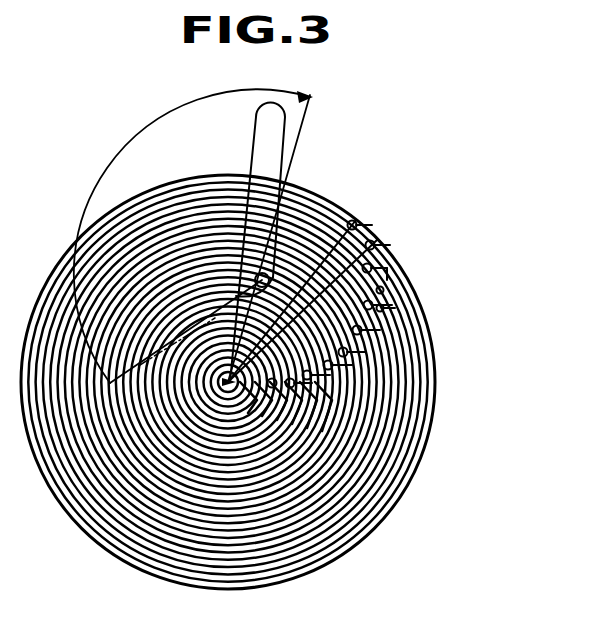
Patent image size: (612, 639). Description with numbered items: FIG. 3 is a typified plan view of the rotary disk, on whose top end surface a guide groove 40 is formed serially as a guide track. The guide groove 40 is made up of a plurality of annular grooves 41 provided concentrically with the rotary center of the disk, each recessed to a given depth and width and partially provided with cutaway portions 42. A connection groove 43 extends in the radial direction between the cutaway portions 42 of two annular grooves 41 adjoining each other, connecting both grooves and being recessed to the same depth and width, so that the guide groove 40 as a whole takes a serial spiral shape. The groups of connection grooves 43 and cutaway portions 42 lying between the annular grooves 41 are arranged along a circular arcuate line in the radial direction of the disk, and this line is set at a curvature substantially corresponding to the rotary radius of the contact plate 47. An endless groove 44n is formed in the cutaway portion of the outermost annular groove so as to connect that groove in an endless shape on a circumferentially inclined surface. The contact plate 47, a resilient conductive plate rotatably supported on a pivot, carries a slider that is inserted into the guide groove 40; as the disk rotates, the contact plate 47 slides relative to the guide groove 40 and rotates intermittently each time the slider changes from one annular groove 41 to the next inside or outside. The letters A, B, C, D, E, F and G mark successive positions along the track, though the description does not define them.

The guide groove 40 is at (406, 510).
The annular grooves 41 is at (323, 544).
The cutaway portions 42 is at (385, 278).
The connection groove 43 is at (392, 307).
The endless groove 44n is at (373, 240).
The contact plate 47 is at (252, 150).
The head position A is at (357, 220).
The head position B is at (373, 242).
The head position C is at (372, 265).
The head position D is at (375, 302).
The head position E is at (350, 350).
The head position F is at (335, 363).
The head position G is at (296, 384).